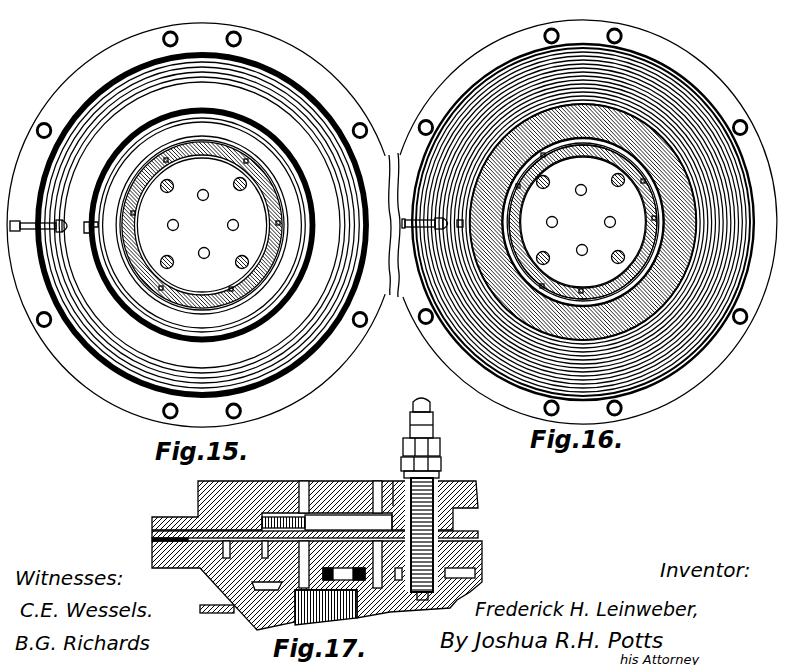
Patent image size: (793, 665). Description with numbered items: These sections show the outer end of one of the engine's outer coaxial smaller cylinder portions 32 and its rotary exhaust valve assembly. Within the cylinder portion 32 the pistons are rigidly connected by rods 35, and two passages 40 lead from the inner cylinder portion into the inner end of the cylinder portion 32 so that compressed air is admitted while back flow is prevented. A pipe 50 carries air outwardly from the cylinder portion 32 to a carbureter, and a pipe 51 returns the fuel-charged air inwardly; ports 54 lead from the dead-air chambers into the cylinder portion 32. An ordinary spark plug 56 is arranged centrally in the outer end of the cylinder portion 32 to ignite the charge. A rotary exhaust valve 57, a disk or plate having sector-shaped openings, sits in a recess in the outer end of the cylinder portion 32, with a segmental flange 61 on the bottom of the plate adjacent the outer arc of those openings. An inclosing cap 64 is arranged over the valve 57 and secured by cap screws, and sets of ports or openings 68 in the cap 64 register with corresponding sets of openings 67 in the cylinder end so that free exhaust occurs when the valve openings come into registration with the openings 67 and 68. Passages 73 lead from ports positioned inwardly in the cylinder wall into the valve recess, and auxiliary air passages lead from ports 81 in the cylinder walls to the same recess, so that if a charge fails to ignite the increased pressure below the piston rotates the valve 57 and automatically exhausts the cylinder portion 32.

In FIG. 15, the outer coaxial smaller cylinder portion 32 is at (284, 229).
In FIG. 16, the outer coaxial smaller cylinder portion 32 is at (512, 308).
In FIG. 17, the outer coaxial smaller cylinder portion 32 is at (482, 548).
In FIG. 15, the rods 35 is at (244, 257).
In FIG. 16, the rods 35 is at (619, 251).
In FIG. 15, the passages 40 is at (203, 201).
In FIG. 16, the passages 40 is at (581, 196).
In FIG. 15, the pipe 50 is at (22, 232).
In FIG. 16, the pipe 50 is at (413, 262).
In FIG. 16, the pipe 51 is at (459, 230).
In FIG. 16, the ports 54 is at (583, 292).
In FIG. 17, the spark plug 56 is at (442, 458).
In FIG. 17, the rotary exhaust valve 57 is at (472, 532).
In FIG. 15, the segmental flange 61 is at (88, 228).
In FIG. 17, the segmental flange 61 is at (393, 481).
In FIG. 17, the inclosing cap 64 is at (463, 494).
In FIG. 17, the openings 67 is at (310, 596).
In FIG. 17, the ports or openings 68 is at (378, 480).
In FIG. 15, the passages 73 is at (166, 289).
In FIG. 16, the passages 73 is at (545, 287).
In FIG. 15, the ports 81 is at (233, 291).